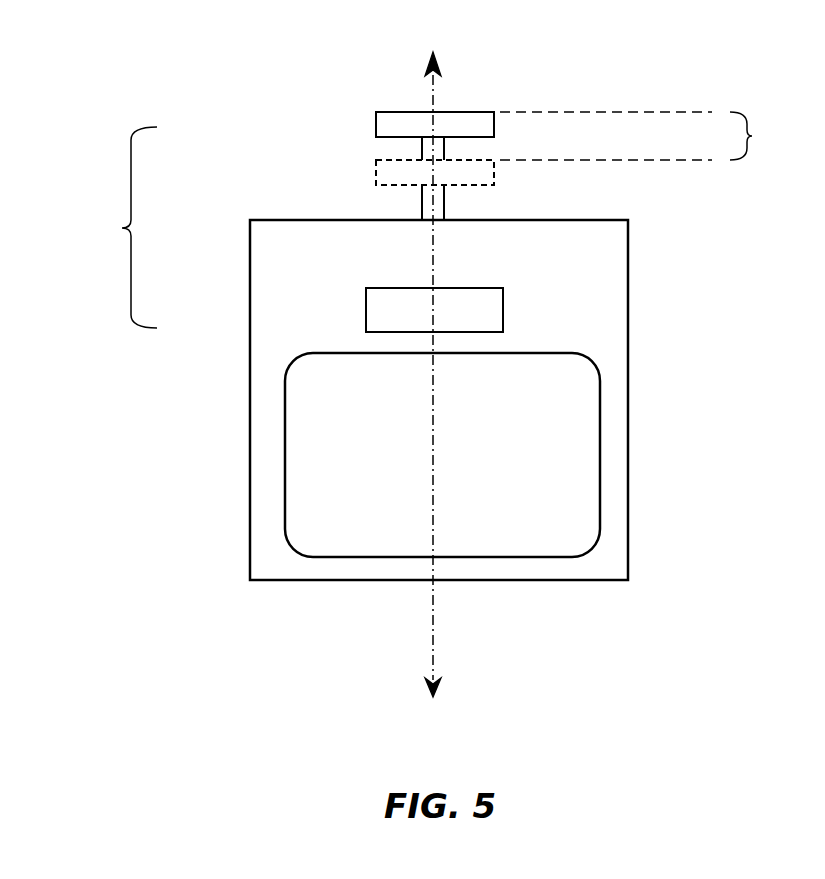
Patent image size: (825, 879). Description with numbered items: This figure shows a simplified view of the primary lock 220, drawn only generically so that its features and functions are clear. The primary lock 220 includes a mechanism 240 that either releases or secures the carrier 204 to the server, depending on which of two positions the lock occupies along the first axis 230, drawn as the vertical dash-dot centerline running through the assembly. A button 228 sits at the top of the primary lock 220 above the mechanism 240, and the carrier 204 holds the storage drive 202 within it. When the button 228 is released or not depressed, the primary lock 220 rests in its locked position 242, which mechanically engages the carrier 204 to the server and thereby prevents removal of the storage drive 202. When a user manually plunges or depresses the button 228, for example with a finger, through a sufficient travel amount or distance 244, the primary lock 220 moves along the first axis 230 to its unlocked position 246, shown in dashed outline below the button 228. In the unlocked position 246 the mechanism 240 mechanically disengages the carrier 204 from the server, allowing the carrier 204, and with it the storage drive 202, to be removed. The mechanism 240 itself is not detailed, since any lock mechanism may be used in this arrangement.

The storage drive 202 is at (285, 453).
The carrier 204 is at (250, 565).
The primary lock 220 is at (121, 228).
The button 228 is at (376, 123).
The first axis L1-L1 230 is at (408, 34).
The mechanism 240 is at (366, 310).
The locked position 242 is at (640, 112).
The travel amount or distance 244 is at (753, 136).
The unlocked position 246 is at (690, 162).